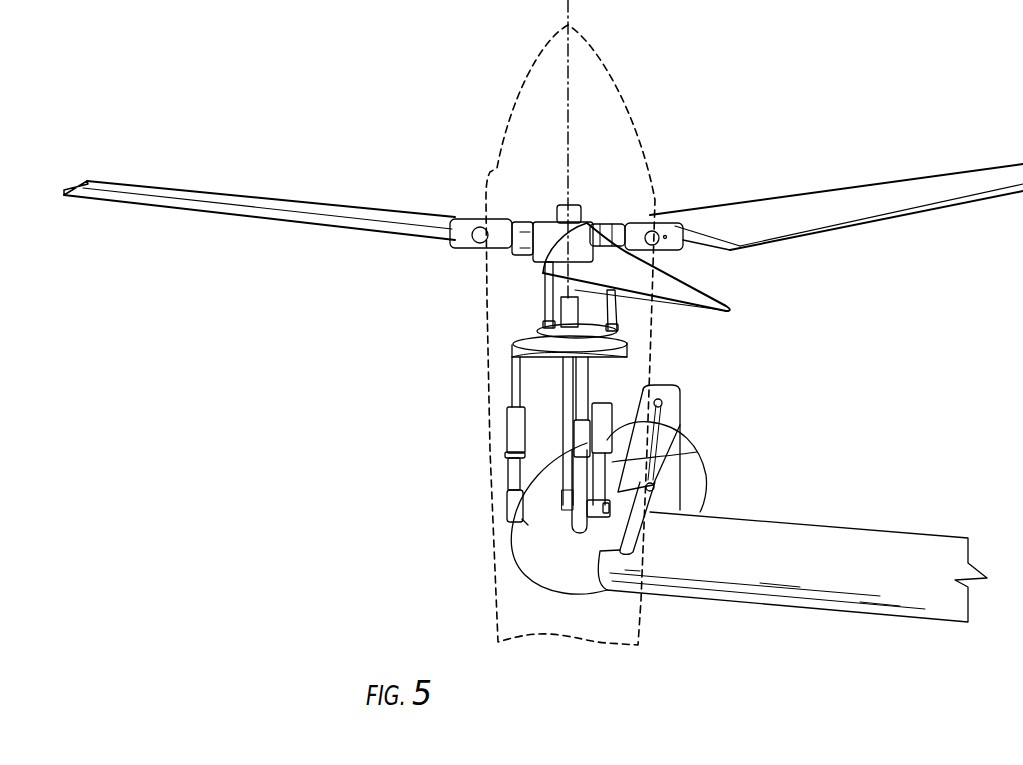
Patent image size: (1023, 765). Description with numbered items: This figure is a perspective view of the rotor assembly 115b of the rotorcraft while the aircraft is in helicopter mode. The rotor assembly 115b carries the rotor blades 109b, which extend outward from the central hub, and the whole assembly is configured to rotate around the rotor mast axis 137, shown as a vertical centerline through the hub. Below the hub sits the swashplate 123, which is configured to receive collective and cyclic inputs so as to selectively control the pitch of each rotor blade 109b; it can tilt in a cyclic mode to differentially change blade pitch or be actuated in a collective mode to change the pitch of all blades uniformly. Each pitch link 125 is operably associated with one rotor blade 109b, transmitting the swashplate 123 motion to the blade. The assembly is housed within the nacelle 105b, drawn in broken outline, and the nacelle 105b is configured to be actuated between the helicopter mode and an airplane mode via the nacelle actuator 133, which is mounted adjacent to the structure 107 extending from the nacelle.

The nacelle 105b is at (486, 474).
The tail boom 107 is at (813, 525).
The rotor blades 109b is at (160, 185).
The rotor assembly 115b is at (390, 318).
The swashplate 123 is at (556, 355).
The pitch link 125 is at (546, 290).
The nacelle actuator 133 is at (695, 452).
The rotor mast axis 137 is at (568, 97).